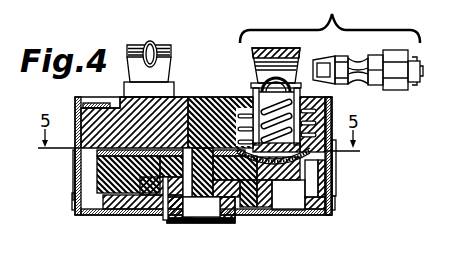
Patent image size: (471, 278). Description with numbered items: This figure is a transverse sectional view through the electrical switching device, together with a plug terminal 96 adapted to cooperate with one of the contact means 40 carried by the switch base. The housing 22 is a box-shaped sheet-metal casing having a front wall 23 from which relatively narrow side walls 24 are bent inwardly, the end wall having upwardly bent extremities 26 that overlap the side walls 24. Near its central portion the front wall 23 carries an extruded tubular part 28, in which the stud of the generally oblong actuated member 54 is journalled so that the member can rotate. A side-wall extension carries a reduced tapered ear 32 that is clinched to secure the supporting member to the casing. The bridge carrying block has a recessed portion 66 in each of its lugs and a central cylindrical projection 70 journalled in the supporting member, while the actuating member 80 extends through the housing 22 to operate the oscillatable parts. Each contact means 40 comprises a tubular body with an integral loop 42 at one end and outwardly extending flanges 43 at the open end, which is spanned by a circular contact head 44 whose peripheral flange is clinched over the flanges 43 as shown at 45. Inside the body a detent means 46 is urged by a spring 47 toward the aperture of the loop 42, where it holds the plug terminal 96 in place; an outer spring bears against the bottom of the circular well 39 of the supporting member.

The housing 22 is at (305, 224).
The front wall 23 is at (110, 214).
The side walls 24 is at (72, 201).
The upwardly bent extremities 26 is at (74, 166).
The extruded tubular part 28 is at (170, 224).
The tapered ear 32 is at (78, 99).
The circular well 39 is at (248, 99).
The contact means 40 is at (135, 39).
The loop 42 is at (292, 52).
The flanges 43 is at (223, 99).
The contact head 44 is at (333, 158).
The clinched flange 45 is at (304, 128).
The detent means 46 is at (254, 86).
The spring 47 is at (252, 97).
The actuated member 54 is at (143, 210).
The recessed portion 66 is at (274, 198).
The cylindrical projection 70 is at (196, 135).
The actuating member 80 is at (210, 198).
The plug terminal 96 is at (398, 90).